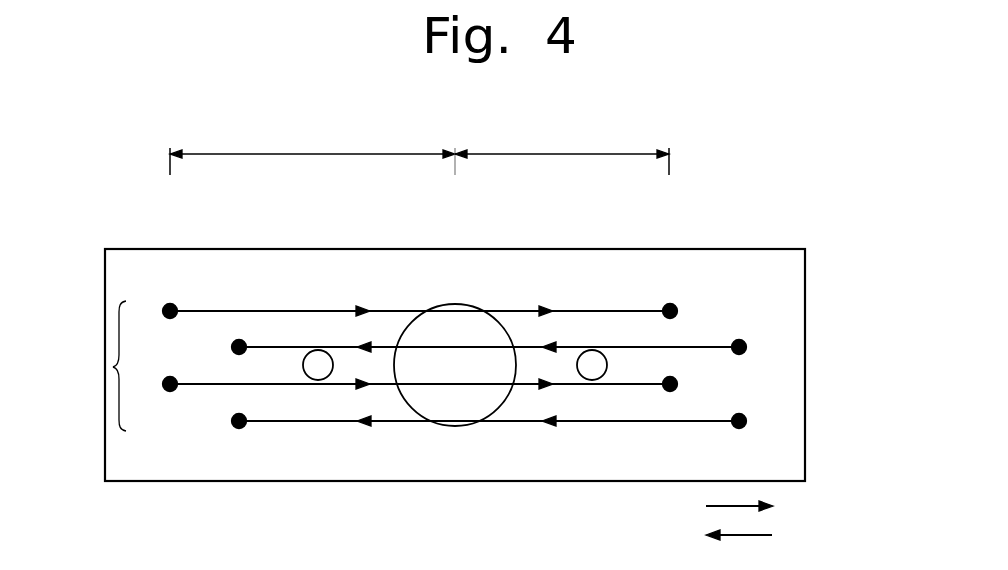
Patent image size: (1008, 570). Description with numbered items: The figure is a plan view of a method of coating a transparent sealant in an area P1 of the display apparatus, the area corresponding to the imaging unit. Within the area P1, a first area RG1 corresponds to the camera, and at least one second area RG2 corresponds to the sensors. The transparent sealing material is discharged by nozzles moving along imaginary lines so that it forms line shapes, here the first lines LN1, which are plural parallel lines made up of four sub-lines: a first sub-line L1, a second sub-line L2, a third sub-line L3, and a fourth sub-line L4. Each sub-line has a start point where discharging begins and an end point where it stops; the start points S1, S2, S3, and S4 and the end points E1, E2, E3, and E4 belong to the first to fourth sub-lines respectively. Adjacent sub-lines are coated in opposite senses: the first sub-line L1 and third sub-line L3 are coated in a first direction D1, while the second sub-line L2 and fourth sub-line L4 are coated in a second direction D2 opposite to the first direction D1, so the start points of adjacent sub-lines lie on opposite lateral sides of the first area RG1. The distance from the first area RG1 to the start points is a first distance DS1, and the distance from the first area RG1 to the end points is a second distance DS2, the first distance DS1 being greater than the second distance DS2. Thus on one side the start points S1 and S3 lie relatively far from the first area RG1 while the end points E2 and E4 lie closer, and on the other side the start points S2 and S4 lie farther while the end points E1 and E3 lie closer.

The area P1 is at (805, 365).
The first distance DS1 is at (312, 151).
The second distance DS2 is at (562, 151).
The first area RG1 is at (451, 303).
The second area RG2 is at (317, 350).
The first sub-line L1 is at (418, 303).
The second sub-line L2 is at (490, 339).
The third sub-line L3 is at (418, 373).
The fourth sub-line L4 is at (490, 412).
The start point S1 is at (155, 311).
The start point S2 is at (755, 346).
The start point S3 is at (155, 384).
The start point S4 is at (755, 420).
The end point E1 is at (684, 311).
The end point E2 is at (225, 346).
The end point E3 is at (684, 383).
The end point E4 is at (225, 420).
The first lines LN1 is at (113, 367).
The first direction D1 is at (753, 505).
The second direction D2 is at (753, 534).